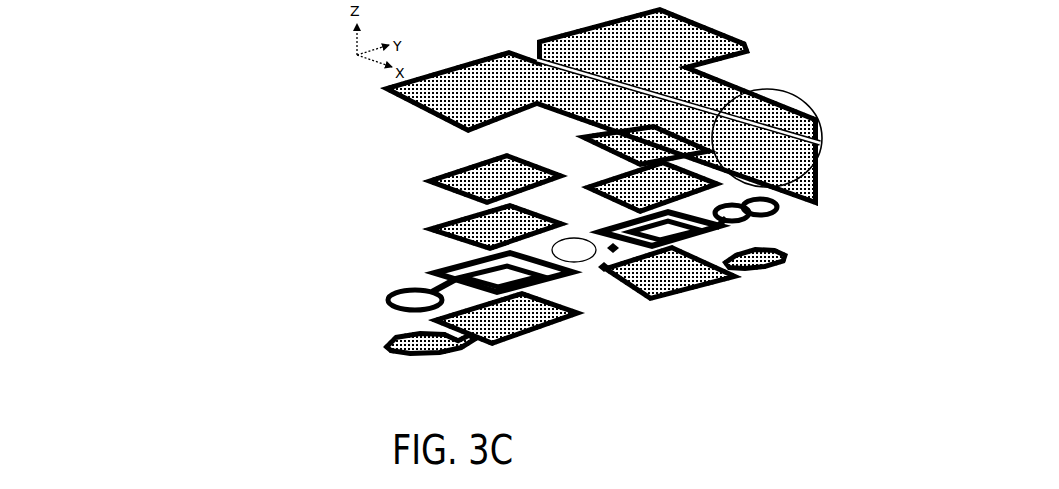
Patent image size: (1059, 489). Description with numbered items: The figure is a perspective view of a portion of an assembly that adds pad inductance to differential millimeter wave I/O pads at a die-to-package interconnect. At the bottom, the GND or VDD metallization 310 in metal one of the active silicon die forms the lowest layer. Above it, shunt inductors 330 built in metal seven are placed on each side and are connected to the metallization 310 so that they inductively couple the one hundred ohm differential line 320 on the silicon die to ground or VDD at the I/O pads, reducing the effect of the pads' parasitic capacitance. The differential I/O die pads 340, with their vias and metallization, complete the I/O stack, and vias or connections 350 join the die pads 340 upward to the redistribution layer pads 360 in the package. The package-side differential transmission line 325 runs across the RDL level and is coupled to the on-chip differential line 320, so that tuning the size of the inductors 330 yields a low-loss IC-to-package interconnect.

The redistribution layer (RDL) pad 360 is at (380, 89).
The vias/connections between die pad and RDL pad 350 is at (421, 179).
The differential I/O pad 340 is at (428, 230).
The shunt inductor 330 is at (390, 300).
The metallization of the active silicon die 310 is at (386, 343).
The differential line on the active device IC 325 is at (752, 187).
The differential line 320 is at (626, 321).